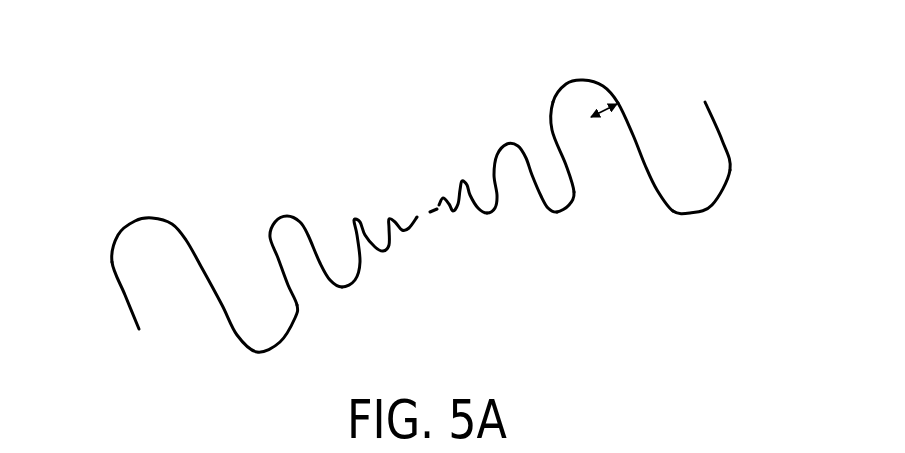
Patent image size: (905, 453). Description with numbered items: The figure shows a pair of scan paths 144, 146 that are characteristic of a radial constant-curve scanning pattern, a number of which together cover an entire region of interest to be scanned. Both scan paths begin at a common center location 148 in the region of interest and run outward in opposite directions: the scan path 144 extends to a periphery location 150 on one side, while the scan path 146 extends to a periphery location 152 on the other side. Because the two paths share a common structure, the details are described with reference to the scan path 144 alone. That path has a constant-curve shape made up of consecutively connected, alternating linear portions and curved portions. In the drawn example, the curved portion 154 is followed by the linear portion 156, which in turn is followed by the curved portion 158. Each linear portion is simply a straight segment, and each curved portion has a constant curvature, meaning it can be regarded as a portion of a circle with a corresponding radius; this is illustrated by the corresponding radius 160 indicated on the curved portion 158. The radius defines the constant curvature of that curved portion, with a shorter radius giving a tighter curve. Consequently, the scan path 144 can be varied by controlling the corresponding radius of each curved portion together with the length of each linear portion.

The scan path 144 is at (737, 195).
The scan path 146 is at (100, 247).
The center location 148 is at (420, 210).
The periphery location 150 is at (746, 121).
The periphery location 152 is at (107, 319).
The curved portion 154 is at (567, 218).
The linear portion 156 is at (552, 148).
The curved portion 158 is at (580, 75).
The corresponding radius 160 is at (607, 117).